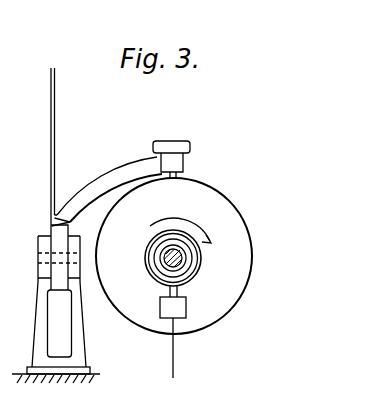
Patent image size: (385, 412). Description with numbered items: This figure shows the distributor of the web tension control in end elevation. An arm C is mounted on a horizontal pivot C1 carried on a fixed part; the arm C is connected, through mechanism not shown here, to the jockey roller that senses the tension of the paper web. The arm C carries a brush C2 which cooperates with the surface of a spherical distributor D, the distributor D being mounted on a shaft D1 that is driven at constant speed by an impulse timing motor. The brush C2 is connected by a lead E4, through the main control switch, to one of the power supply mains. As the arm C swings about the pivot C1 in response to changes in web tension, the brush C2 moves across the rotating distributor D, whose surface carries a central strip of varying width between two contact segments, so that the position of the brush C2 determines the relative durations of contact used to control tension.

The lead E4 is at (55, 97).
The arm C is at (82, 200).
The horizontal pivot C1 is at (45, 258).
The brush C2 is at (183, 178).
The spherical distributor D is at (230, 222).
The shaft D1 is at (197, 270).